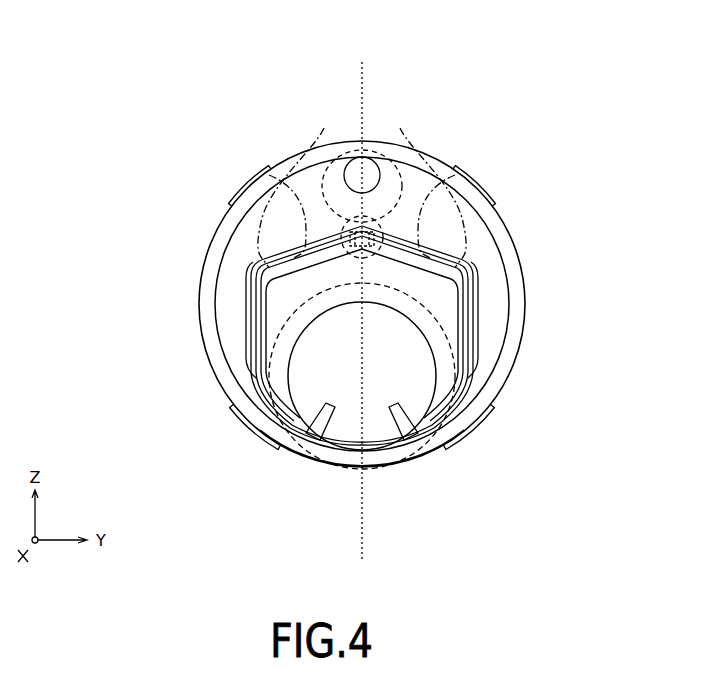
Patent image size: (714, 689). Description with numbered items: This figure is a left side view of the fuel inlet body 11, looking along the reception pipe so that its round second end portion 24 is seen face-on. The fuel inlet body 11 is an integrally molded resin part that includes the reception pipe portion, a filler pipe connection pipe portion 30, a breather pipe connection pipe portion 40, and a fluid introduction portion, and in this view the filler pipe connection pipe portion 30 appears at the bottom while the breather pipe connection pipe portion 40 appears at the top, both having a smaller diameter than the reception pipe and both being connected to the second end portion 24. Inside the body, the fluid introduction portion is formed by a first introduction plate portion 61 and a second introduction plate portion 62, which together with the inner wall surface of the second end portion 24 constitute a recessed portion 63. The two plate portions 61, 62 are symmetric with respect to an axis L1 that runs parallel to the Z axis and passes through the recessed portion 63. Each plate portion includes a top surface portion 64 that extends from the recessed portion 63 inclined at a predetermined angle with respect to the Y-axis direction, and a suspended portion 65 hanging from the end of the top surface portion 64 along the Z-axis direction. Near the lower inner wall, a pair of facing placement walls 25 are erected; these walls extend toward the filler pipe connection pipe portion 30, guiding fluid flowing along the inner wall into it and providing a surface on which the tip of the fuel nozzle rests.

The fuel inlet body 11 is at (583, 140).
The second end portion 24 is at (307, 220).
The placement walls 25 is at (398, 445).
The filler pipe connection pipe portion 30 is at (288, 440).
The breather pipe connection pipe portion 40 is at (315, 142).
The first introduction plate portion 61 is at (255, 272).
The second introduction plate portion 62 is at (472, 275).
The recessed portion 63 is at (401, 158).
The top surface portion 64 is at (254, 190).
The suspended portion 65 is at (250, 340).
The axis L1 is at (365, 93).